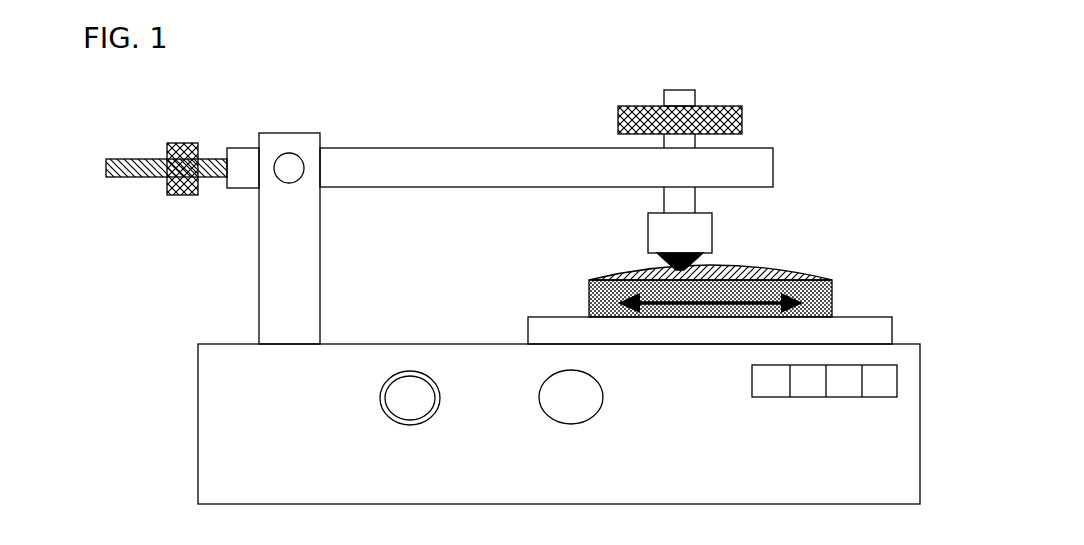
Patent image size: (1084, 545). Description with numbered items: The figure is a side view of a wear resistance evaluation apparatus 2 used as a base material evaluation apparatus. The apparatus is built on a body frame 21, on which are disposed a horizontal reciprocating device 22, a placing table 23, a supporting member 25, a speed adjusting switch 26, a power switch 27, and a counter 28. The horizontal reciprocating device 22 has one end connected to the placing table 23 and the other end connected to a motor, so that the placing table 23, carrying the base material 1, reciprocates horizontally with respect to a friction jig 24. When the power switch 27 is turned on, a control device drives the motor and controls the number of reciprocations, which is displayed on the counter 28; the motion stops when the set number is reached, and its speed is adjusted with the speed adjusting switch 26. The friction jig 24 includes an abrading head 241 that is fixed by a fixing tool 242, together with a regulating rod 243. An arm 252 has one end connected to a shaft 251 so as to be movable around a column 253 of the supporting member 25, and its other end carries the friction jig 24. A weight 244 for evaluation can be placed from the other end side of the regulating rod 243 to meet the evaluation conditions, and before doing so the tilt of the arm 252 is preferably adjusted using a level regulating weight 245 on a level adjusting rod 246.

The base material 1 is at (815, 275).
The wear resistance evaluation apparatus 2 is at (828, 118).
The body frame 21 is at (215, 384).
The horizontal reciprocating device 22 is at (535, 337).
The placing table 23 is at (596, 306).
The friction jig 24 is at (695, 204).
The abrading head 241 is at (663, 262).
The fixing tool 242 is at (664, 234).
The regulating rod 243 is at (676, 200).
The weight for evaluation 244 is at (640, 116).
The supporting member 25 is at (429, 207).
The shaft 251 is at (298, 163).
The arm 252 is at (458, 158).
The column 253 is at (272, 279).
The level regulating weight 245 is at (178, 146).
The level adjusting rod 246 is at (124, 161).
The speed adjusting switch 26 is at (586, 408).
The power switch 27 is at (425, 412).
The counter 28 is at (758, 384).